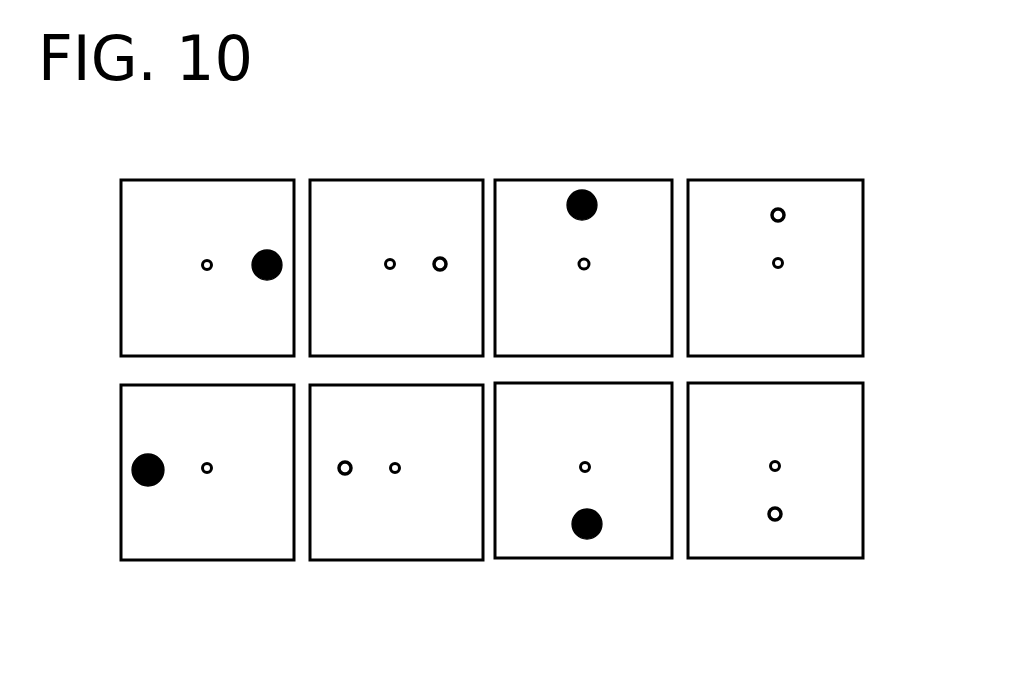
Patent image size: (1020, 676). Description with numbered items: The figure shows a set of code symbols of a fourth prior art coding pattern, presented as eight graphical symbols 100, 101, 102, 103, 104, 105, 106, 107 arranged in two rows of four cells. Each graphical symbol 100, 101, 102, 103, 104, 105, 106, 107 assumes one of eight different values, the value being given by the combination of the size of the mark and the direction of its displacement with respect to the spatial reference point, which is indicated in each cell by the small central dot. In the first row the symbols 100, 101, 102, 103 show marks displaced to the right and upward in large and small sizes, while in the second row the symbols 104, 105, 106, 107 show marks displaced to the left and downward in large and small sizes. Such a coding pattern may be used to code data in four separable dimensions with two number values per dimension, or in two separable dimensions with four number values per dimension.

The graphical symbol 100 is at (215, 181).
The graphical symbol 101 is at (403, 181).
The graphical symbol 102 is at (571, 181).
The graphical symbol 103 is at (763, 181).
The graphical symbol 104 is at (205, 561).
The graphical symbol 105 is at (393, 561).
The graphical symbol 106 is at (580, 561).
The graphical symbol 107 is at (765, 561).